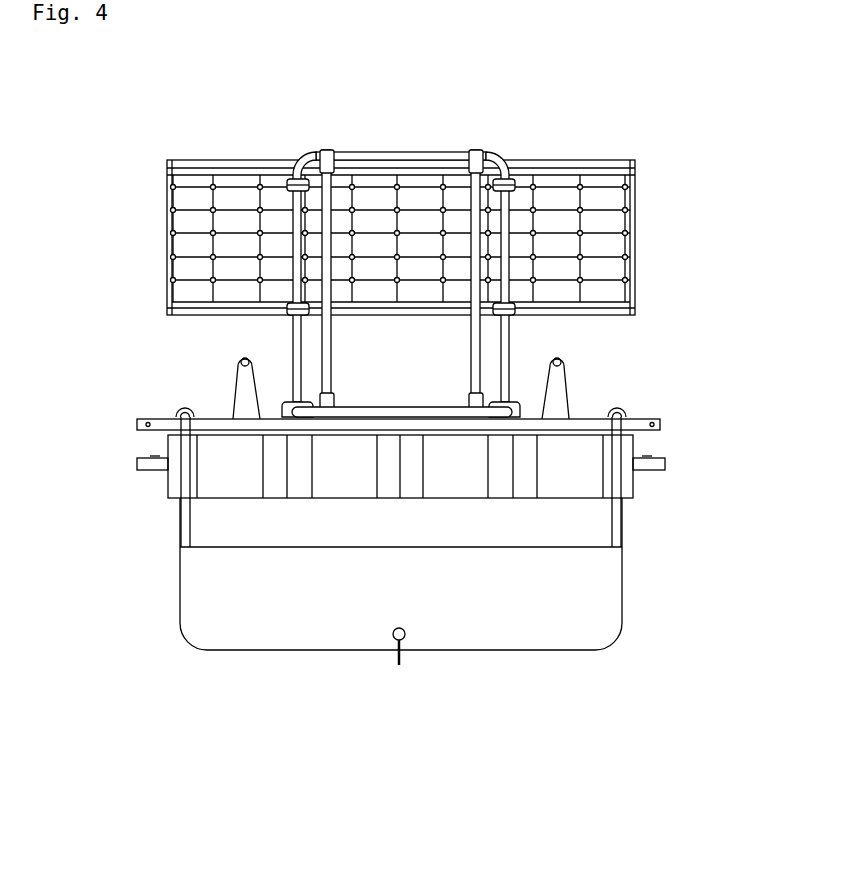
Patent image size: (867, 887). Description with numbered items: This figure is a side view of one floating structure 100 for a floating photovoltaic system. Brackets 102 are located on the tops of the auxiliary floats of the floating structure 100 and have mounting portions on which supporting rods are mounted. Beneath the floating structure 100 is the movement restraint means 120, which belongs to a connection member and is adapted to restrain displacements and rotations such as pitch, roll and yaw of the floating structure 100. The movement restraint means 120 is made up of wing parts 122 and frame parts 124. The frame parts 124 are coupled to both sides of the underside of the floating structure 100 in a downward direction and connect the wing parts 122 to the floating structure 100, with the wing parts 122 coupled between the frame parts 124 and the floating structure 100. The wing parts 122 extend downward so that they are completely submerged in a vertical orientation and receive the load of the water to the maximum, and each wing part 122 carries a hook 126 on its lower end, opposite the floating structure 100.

The floating structure 100 is at (155, 130).
The bracket 102 is at (240, 363).
The movement restraint means 120 is at (667, 605).
The wing part 122 is at (267, 603).
The frame part 124 is at (177, 518).
The hook 126 is at (406, 637).